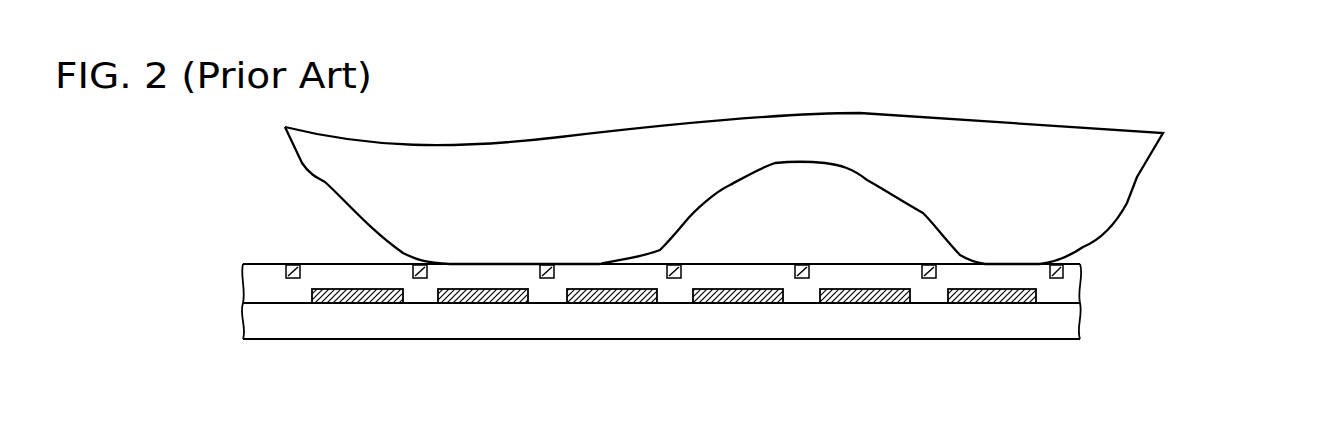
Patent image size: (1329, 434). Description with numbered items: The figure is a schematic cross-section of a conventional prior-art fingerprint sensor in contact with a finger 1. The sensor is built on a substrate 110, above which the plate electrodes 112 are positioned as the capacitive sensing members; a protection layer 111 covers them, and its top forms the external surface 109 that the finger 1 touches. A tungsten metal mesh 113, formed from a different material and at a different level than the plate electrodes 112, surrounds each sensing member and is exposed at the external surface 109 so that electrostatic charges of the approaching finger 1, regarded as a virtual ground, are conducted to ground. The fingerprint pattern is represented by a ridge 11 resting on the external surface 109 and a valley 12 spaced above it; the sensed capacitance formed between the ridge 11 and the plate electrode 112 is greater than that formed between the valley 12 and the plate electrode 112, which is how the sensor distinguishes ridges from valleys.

The finger 1 is at (1144, 172).
The ridge 11 is at (516, 262).
The valley 12 is at (810, 165).
The external surface 109 is at (268, 263).
The substrate 110 is at (1076, 322).
The protection layer 111 is at (1082, 288).
The plate electrodes 112 is at (362, 303).
The tungsten metal mesh 113 is at (546, 279).